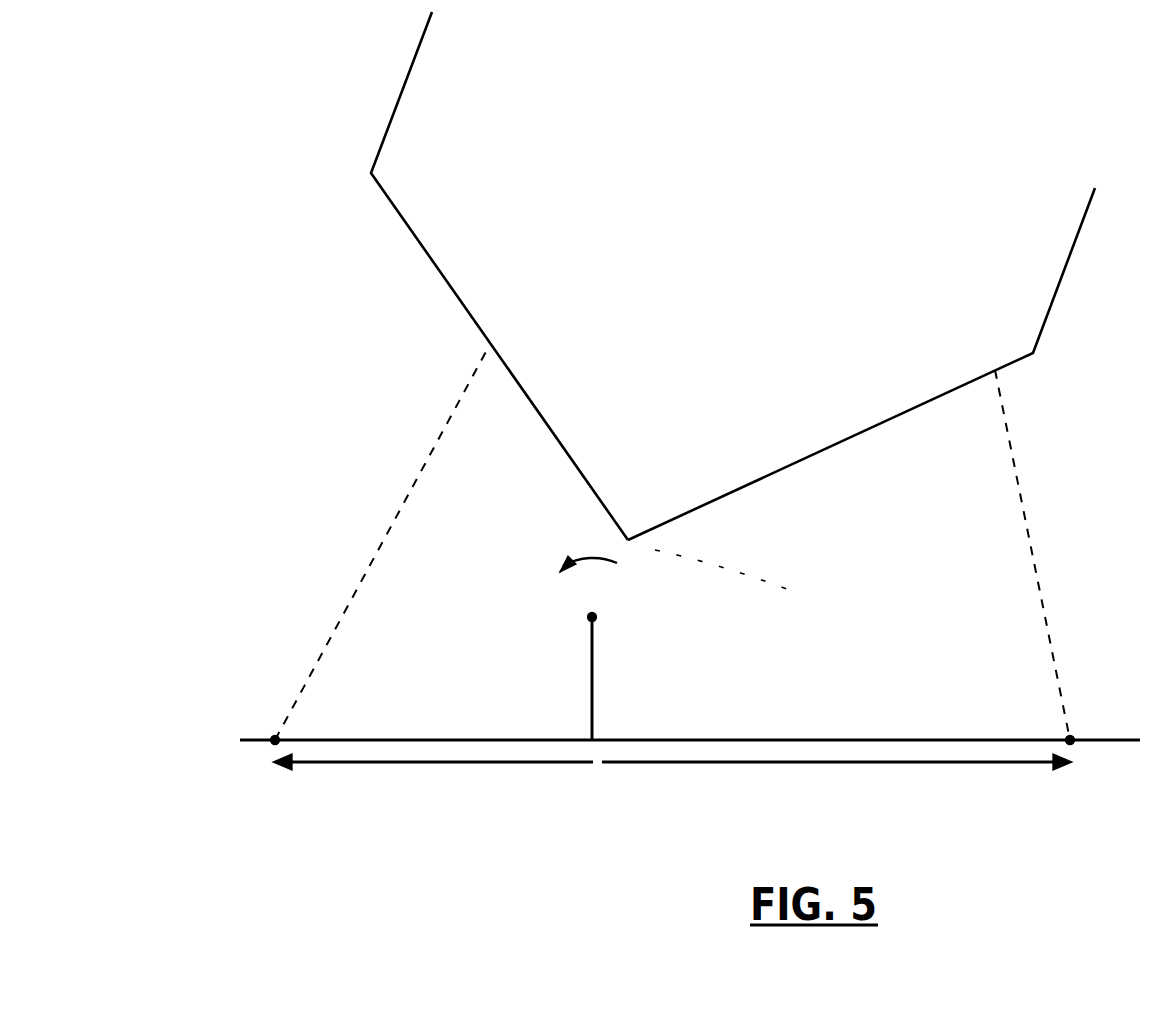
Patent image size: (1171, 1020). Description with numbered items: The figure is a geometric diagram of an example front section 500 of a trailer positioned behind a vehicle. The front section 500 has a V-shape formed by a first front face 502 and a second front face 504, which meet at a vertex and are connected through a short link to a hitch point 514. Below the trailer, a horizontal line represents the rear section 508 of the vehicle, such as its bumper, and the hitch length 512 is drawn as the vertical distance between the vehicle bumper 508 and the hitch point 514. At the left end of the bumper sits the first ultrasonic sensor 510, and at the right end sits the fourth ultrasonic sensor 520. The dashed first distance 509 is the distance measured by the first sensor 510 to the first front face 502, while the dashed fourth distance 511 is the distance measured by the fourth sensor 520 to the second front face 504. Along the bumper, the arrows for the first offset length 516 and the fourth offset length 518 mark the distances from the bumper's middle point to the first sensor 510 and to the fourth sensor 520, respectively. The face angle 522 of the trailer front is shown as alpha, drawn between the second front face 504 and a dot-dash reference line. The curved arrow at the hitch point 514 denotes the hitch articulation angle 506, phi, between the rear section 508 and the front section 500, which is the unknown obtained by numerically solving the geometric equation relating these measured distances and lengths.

The front section 500 is at (847, 213).
The first front face 502 is at (554, 434).
The second front face 504 is at (872, 427).
The HAA 506 is at (590, 556).
The rear section 508 is at (845, 738).
The distance d1 509 is at (392, 528).
The sensor 1 510 is at (272, 737).
The distance d4 511 is at (1031, 548).
The Lhitch 512 is at (596, 690).
The hitch point 514 is at (597, 615).
The L1 516 is at (480, 765).
The L4 518 is at (885, 765).
The sensor 4 520 is at (1075, 737).
The face angle 522 is at (708, 535).